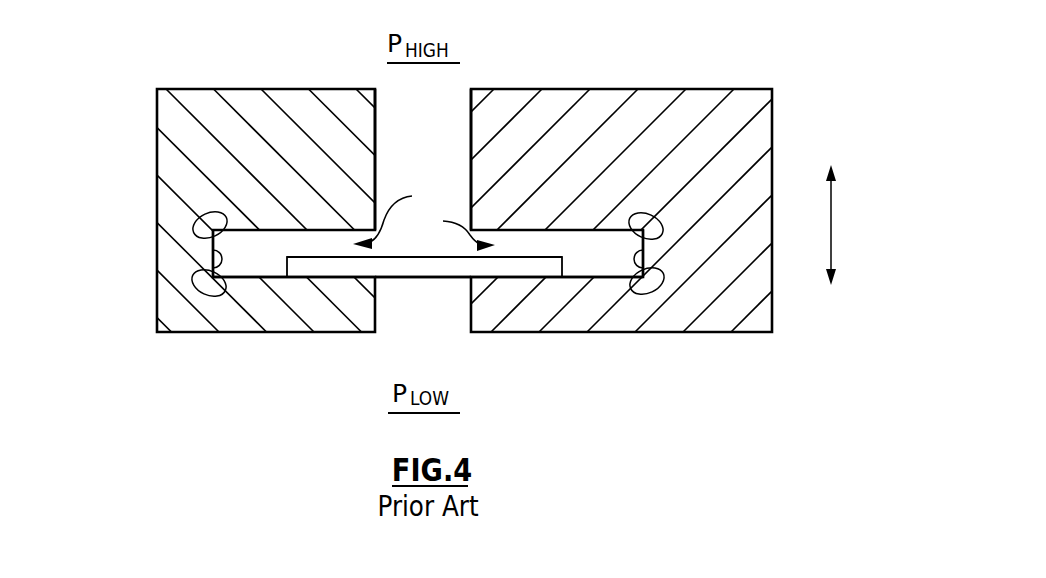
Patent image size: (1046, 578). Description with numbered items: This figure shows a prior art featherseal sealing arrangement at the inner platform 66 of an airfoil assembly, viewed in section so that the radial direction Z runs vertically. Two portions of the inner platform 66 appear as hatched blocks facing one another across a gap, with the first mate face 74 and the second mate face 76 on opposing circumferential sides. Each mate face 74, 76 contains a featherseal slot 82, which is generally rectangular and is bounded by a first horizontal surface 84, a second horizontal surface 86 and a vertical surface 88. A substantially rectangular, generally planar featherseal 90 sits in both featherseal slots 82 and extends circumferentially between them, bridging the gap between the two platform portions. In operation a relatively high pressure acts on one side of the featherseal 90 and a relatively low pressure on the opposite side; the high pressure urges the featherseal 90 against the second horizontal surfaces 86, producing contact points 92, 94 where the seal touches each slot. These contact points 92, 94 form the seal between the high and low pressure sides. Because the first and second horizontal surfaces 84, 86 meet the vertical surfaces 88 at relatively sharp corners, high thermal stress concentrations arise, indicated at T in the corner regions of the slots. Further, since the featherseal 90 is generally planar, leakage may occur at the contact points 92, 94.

The inner platform 66 is at (157, 142).
The first mate face 74 is at (471, 170).
The second mate face 76 is at (375, 112).
The featherseal slot 82 is at (424, 216).
The first horizontal surface 84 is at (292, 226).
The second horizontal surface 86 is at (250, 277).
The vertical surface 88 is at (214, 262).
The featherseal 90 is at (405, 278).
The contact point 92 is at (362, 278).
The contact point 94 is at (487, 278).
The thermal stress concentrations T is at (195, 230).
The radial direction Z is at (832, 230).